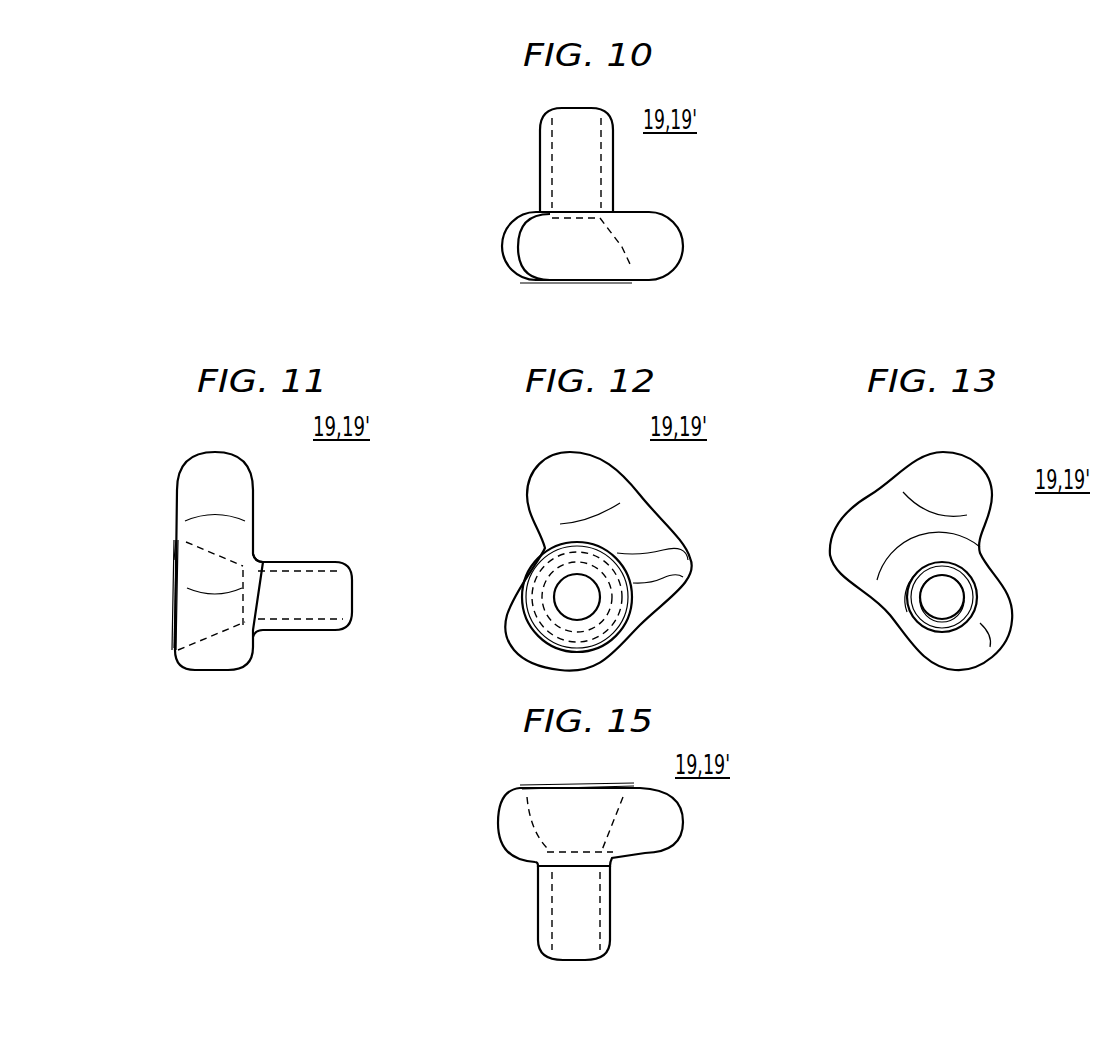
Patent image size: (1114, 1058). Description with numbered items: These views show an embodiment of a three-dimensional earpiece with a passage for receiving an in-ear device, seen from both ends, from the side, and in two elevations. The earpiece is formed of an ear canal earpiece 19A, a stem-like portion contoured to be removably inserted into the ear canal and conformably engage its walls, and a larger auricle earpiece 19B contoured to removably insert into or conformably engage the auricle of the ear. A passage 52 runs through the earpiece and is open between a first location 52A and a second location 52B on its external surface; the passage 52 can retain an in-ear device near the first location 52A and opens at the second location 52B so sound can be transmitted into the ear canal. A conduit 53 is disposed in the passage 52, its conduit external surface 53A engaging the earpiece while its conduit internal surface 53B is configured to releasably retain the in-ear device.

In FIG. 10, the ear canal earpiece 19A is at (540, 130).
In FIG. 11, the ear canal earpiece 19A is at (344, 625).
In FIG. 13, the ear canal earpiece 19A is at (908, 610).
In FIG. 15, the ear canal earpiece 19A is at (613, 918).
In FIG. 10, the auricle earpiece 19B is at (502, 240).
In FIG. 11, the auricle earpiece 19B is at (249, 490).
In FIG. 12, the auricle earpiece 19B is at (541, 508).
In FIG. 13, the auricle earpiece 19B is at (978, 460).
In FIG. 15, the auricle earpiece 19B is at (684, 830).
In FIG. 10, the passage 52 is at (595, 285).
In FIG. 11, the passage 52 is at (169, 587).
In FIG. 12, the passage 52 is at (579, 596).
In FIG. 13, the passage 52 is at (946, 604).
In FIG. 11, the first location 52A is at (180, 543).
In FIG. 13, the first location 52A is at (942, 600).
In FIG. 11, the second location 52B is at (353, 585).
In FIG. 13, the second location 52B is at (940, 587).
In FIG. 10, the conduit 53 is at (625, 248).
In FIG. 11, the conduit 53 is at (173, 646).
In FIG. 12, the conduit 53 is at (635, 608).
In FIG. 13, the conduit 53 is at (933, 633).
In FIG. 15, the conduit 53 is at (521, 792).
In FIG. 12, the conduit external surface 53A is at (638, 577).
In FIG. 12, the conduit internal surface 53B is at (607, 560).